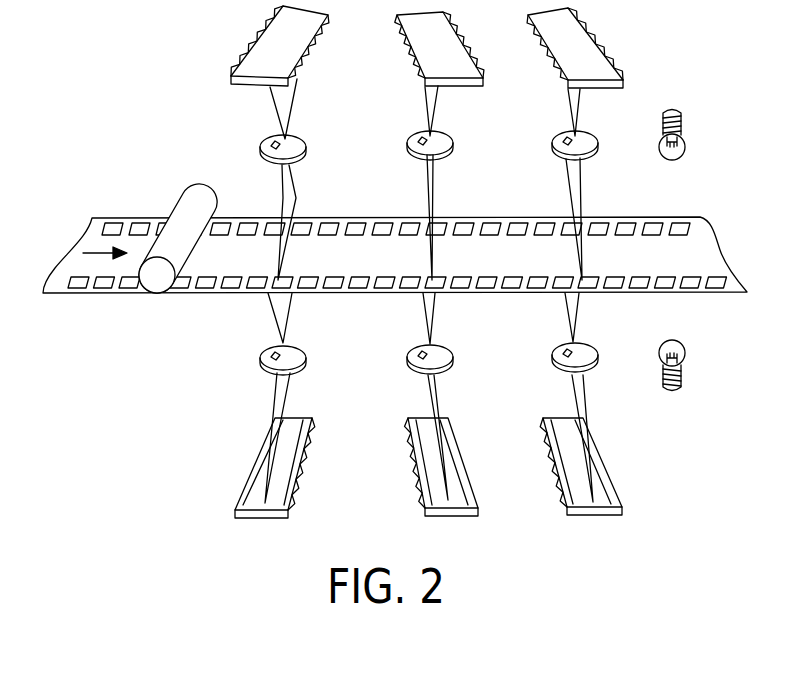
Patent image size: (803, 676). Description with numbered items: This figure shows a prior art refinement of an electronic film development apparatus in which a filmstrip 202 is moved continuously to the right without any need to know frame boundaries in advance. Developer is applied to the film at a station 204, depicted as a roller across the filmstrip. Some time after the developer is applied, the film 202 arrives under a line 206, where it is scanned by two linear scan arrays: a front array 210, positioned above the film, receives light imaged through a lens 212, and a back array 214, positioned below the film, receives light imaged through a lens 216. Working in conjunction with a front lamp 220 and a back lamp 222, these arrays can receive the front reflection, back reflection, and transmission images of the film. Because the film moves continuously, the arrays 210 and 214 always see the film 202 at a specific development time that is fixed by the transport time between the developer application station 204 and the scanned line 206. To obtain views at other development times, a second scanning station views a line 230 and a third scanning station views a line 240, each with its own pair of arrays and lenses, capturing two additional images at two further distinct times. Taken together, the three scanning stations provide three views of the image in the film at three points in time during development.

The filmstrip 202 is at (70, 295).
The developer application station 204 is at (157, 280).
The scanned line 206 is at (295, 248).
The front array 210 is at (298, 65).
The lens 212 is at (305, 137).
The back array 214 is at (292, 418).
The lens 216 is at (303, 348).
The front lamp 220 is at (685, 143).
The back lamp 222 is at (683, 348).
The second scanning station line 230 is at (432, 247).
The third scanning station line 240 is at (583, 247).